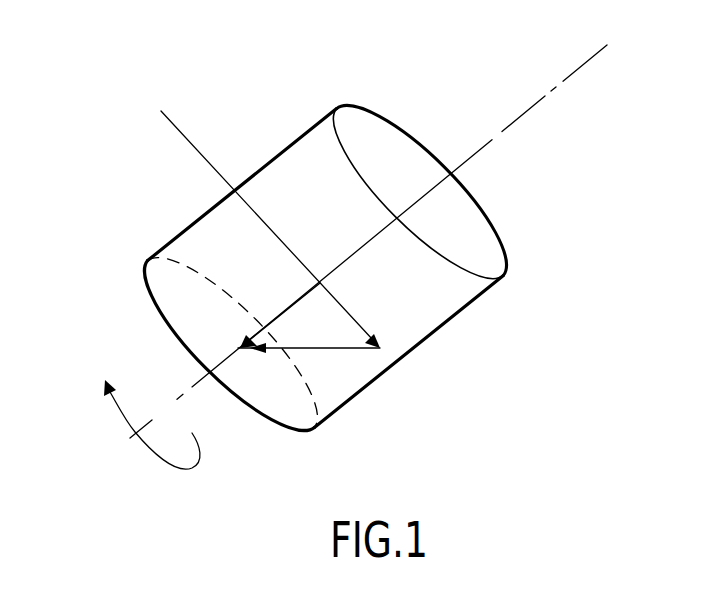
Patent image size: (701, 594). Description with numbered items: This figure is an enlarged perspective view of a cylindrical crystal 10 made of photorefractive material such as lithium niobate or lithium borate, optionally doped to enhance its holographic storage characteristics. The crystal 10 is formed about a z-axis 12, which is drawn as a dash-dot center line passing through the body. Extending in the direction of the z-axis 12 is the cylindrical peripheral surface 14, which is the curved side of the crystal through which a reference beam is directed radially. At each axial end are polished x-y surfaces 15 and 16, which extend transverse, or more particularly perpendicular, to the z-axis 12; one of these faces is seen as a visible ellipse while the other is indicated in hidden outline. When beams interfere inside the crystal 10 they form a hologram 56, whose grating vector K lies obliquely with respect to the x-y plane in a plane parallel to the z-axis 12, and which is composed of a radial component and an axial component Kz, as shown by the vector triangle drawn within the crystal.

The cylindrical crystal 10 is at (289, 133).
The z-axis 12 is at (568, 75).
The cylindrical peripheral surface 14 is at (432, 303).
The polished x-y surface 15 is at (460, 228).
The polished x-y surface 16 is at (193, 304).
The hologram 56 is at (340, 363).